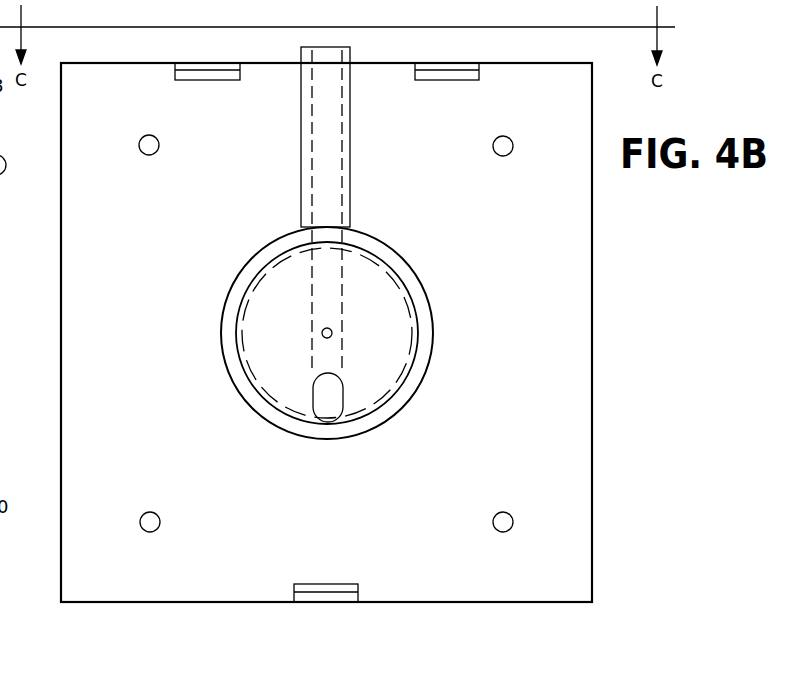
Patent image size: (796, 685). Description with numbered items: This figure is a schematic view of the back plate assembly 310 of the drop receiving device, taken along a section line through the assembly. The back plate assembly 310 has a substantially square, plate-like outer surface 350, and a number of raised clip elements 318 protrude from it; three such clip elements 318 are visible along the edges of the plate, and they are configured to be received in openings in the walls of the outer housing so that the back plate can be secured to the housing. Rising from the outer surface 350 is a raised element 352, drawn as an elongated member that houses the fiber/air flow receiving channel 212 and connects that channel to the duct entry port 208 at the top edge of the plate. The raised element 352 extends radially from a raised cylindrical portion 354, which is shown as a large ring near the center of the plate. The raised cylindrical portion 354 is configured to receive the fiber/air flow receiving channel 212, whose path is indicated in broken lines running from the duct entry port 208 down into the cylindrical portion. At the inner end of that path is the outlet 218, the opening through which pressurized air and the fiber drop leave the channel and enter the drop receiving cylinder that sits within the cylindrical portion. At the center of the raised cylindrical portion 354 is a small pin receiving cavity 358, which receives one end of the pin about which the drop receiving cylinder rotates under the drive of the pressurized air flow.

The duct entry port 208 is at (301, 58).
The fiber/air flow receiving channel 212 is at (322, 152).
The outlet 218 is at (327, 410).
The back plate assembly 310 is at (540, 603).
The clip elements 318 is at (207, 78).
The outer surface 350 is at (145, 403).
The raised element 352 is at (350, 209).
The raised cylindrical portion 354 is at (420, 305).
The pin receiving cavity 358 is at (322, 333).